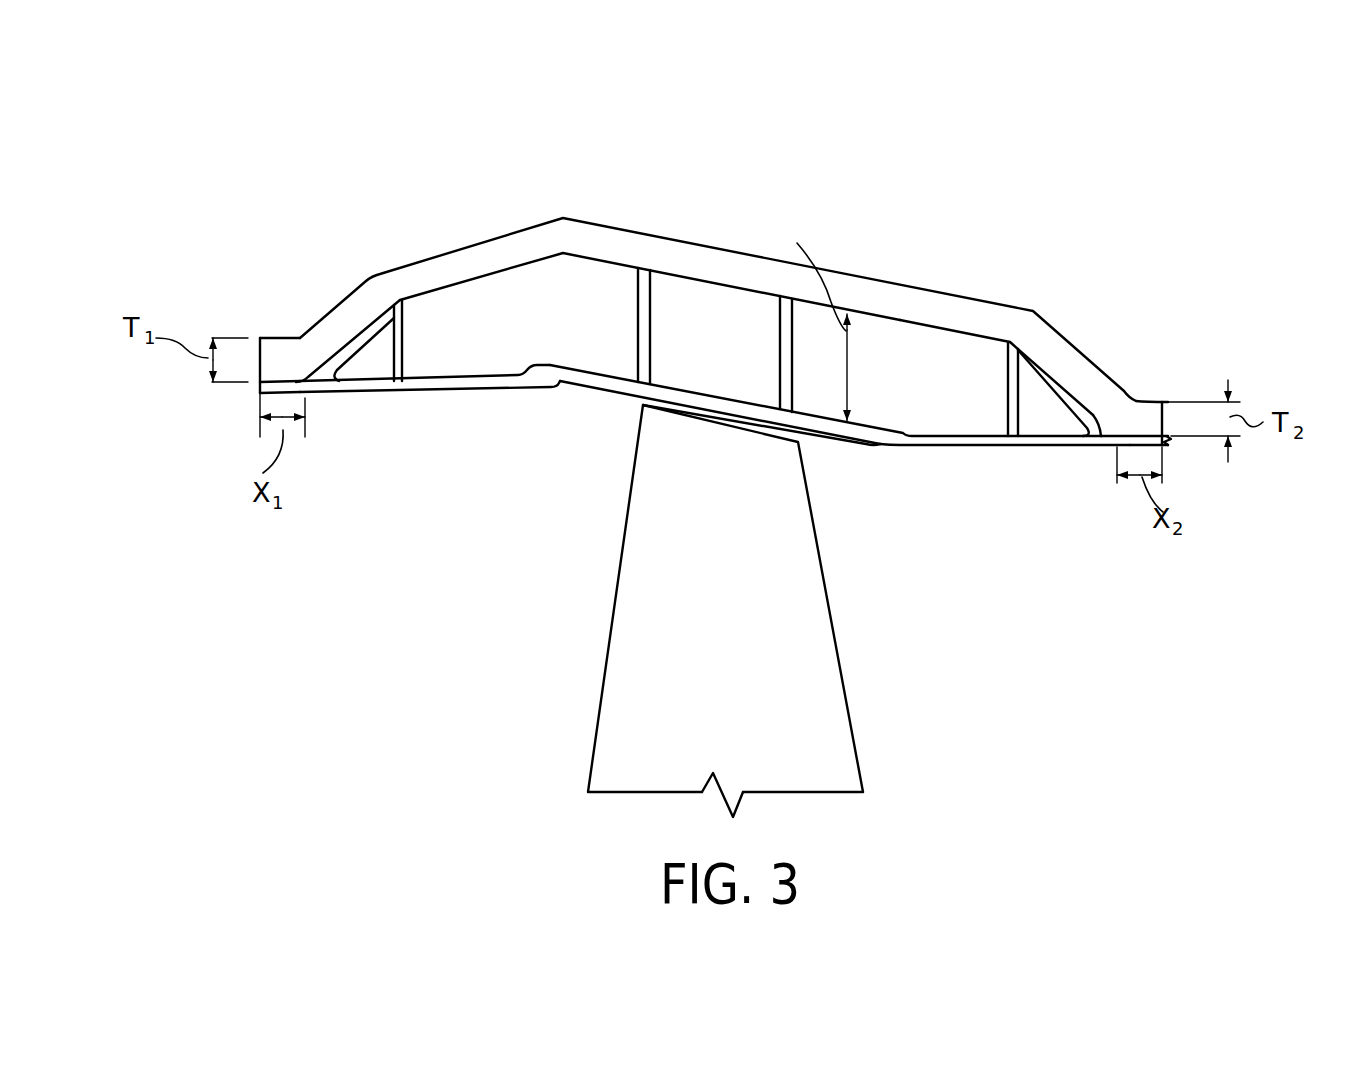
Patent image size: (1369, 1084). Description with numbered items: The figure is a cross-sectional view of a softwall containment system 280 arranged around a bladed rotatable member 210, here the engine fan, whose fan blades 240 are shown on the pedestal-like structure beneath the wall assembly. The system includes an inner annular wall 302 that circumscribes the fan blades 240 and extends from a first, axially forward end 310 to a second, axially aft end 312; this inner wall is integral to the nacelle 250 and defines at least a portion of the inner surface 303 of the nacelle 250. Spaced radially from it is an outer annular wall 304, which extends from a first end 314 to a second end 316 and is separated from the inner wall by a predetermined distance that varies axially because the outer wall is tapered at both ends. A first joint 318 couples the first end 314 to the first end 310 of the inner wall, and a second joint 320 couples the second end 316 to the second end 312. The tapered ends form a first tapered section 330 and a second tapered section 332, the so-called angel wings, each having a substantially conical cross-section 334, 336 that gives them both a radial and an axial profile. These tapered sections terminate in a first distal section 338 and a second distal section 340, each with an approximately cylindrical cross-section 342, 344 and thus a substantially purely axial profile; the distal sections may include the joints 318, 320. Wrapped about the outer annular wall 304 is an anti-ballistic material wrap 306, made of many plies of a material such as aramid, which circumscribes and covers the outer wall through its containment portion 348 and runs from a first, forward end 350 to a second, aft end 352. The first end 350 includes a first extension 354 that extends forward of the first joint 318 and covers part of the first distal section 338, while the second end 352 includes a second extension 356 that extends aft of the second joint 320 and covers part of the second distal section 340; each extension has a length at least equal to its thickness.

The softwall containment system 280 is at (445, 205).
The containment portion 348 is at (668, 243).
The outer annular wall 304 is at (1018, 312).
The anti-ballistic material wrap 306 is at (872, 279).
The first end of outer annular wall 314 is at (350, 327).
The second end of outer annular wall 316 is at (1057, 373).
The first tapered section 330 is at (378, 357).
The second tapered section 332 is at (1085, 361).
The conical cross-section of first tapered section 334 is at (398, 333).
The conical cross-section of second tapered section 336 is at (1028, 408).
The first distal section 338 is at (282, 387).
The second distal section 340 is at (1167, 397).
The cylindrical cross-section of first distal section 342 is at (247, 390).
The cylindrical cross-section of second distal section 344 is at (1183, 458).
The first end of anti-ballistic material wrap 350 is at (253, 330).
The second end of anti-ballistic material wrap 352 is at (1172, 395).
The first extension 354 is at (292, 357).
The second extension 356 is at (1127, 412).
The first joint 318 is at (318, 383).
The second joint 320 is at (1097, 438).
The first end of inner annular wall 310 is at (366, 412).
The nacelle 250 is at (452, 401).
The inner annular wall 302 is at (951, 445).
The inner surface of nacelle 303 is at (891, 447).
The second end of inner annular wall 312 is at (1050, 462).
The bladed rotatable member 210 is at (667, 683).
The fan blades 240 is at (731, 683).